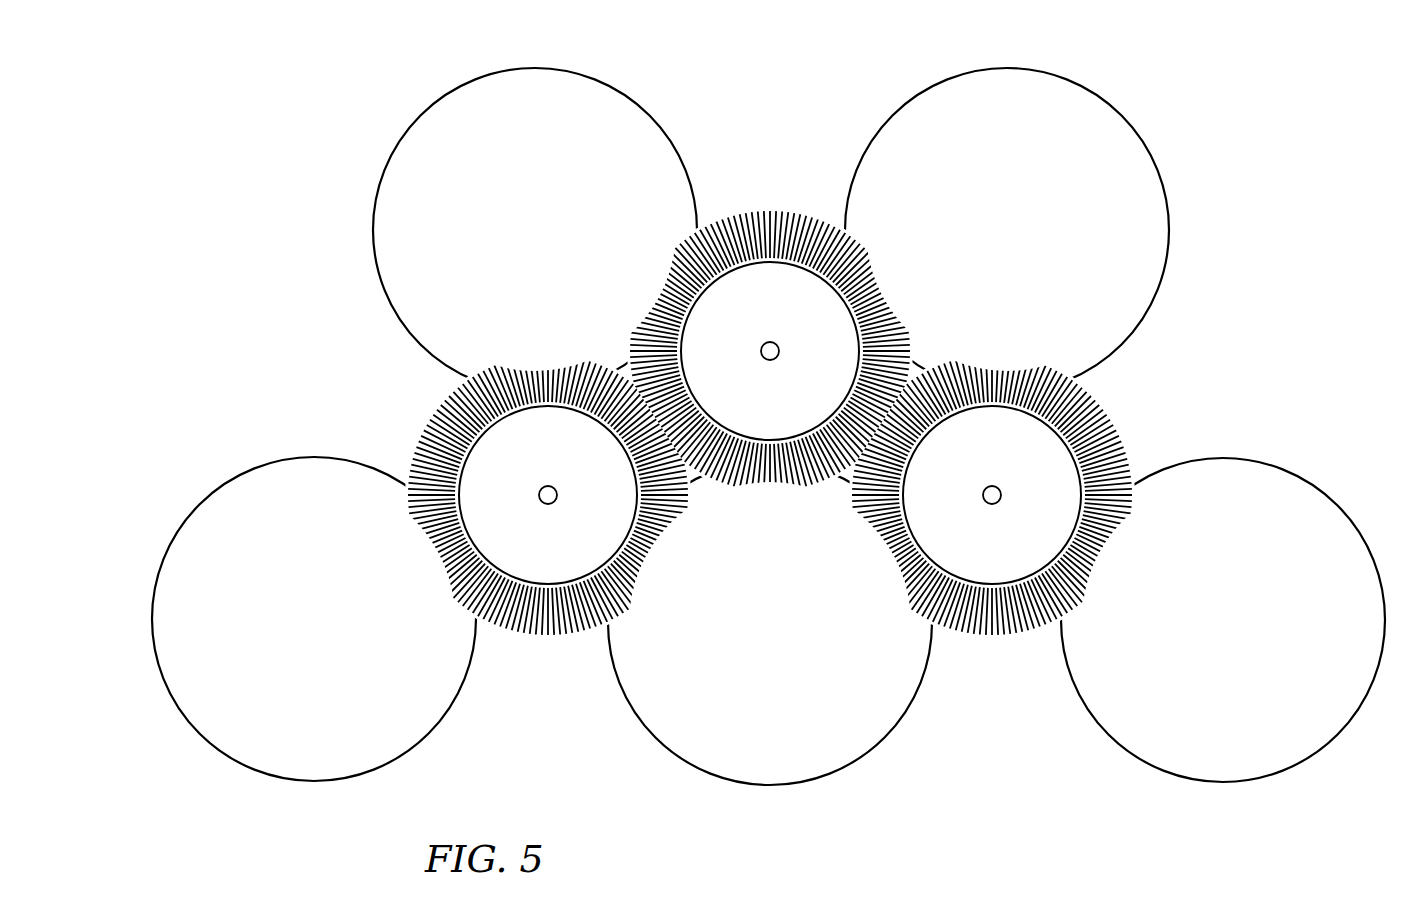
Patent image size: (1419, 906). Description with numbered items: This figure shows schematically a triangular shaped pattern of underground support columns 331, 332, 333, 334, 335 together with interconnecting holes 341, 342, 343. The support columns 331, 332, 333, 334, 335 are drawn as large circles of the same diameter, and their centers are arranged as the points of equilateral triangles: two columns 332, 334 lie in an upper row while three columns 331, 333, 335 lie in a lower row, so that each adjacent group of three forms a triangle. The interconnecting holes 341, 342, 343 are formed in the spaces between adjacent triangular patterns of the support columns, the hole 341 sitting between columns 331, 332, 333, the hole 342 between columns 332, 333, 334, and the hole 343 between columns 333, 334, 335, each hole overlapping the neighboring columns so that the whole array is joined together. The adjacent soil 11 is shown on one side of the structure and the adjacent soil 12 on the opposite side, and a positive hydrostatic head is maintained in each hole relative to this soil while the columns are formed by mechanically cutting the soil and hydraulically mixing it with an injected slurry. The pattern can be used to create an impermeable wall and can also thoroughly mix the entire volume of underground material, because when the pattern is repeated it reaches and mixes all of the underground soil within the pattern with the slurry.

The adjacent soil 11 is at (772, 67).
The adjacent soil 12 is at (782, 836).
The underground support column 331 is at (314, 607).
The underground support column 332 is at (535, 214).
The underground support column 333 is at (791, 623).
The underground support column 334 is at (1007, 223).
The underground support column 335 is at (1223, 606).
The interconnecting hole 341 is at (536, 474).
The interconnecting hole 342 is at (758, 330).
The interconnecting hole 343 is at (994, 474).